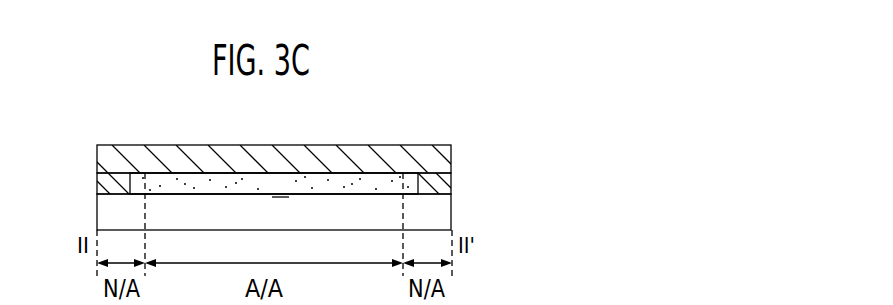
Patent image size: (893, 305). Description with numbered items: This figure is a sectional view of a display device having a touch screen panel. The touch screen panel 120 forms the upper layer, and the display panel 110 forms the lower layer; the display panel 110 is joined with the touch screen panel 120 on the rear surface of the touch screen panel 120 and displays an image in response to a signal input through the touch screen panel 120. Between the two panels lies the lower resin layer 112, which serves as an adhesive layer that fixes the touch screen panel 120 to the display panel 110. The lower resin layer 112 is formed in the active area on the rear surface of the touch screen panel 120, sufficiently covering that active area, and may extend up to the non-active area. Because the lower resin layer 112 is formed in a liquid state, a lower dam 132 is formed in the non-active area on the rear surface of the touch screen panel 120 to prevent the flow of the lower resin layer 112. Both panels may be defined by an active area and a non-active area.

The display panel 110 is at (445, 217).
The lower resin layer 112 is at (171, 183).
The touch screen panel 120 is at (451, 152).
The lower dam 132 is at (448, 181).